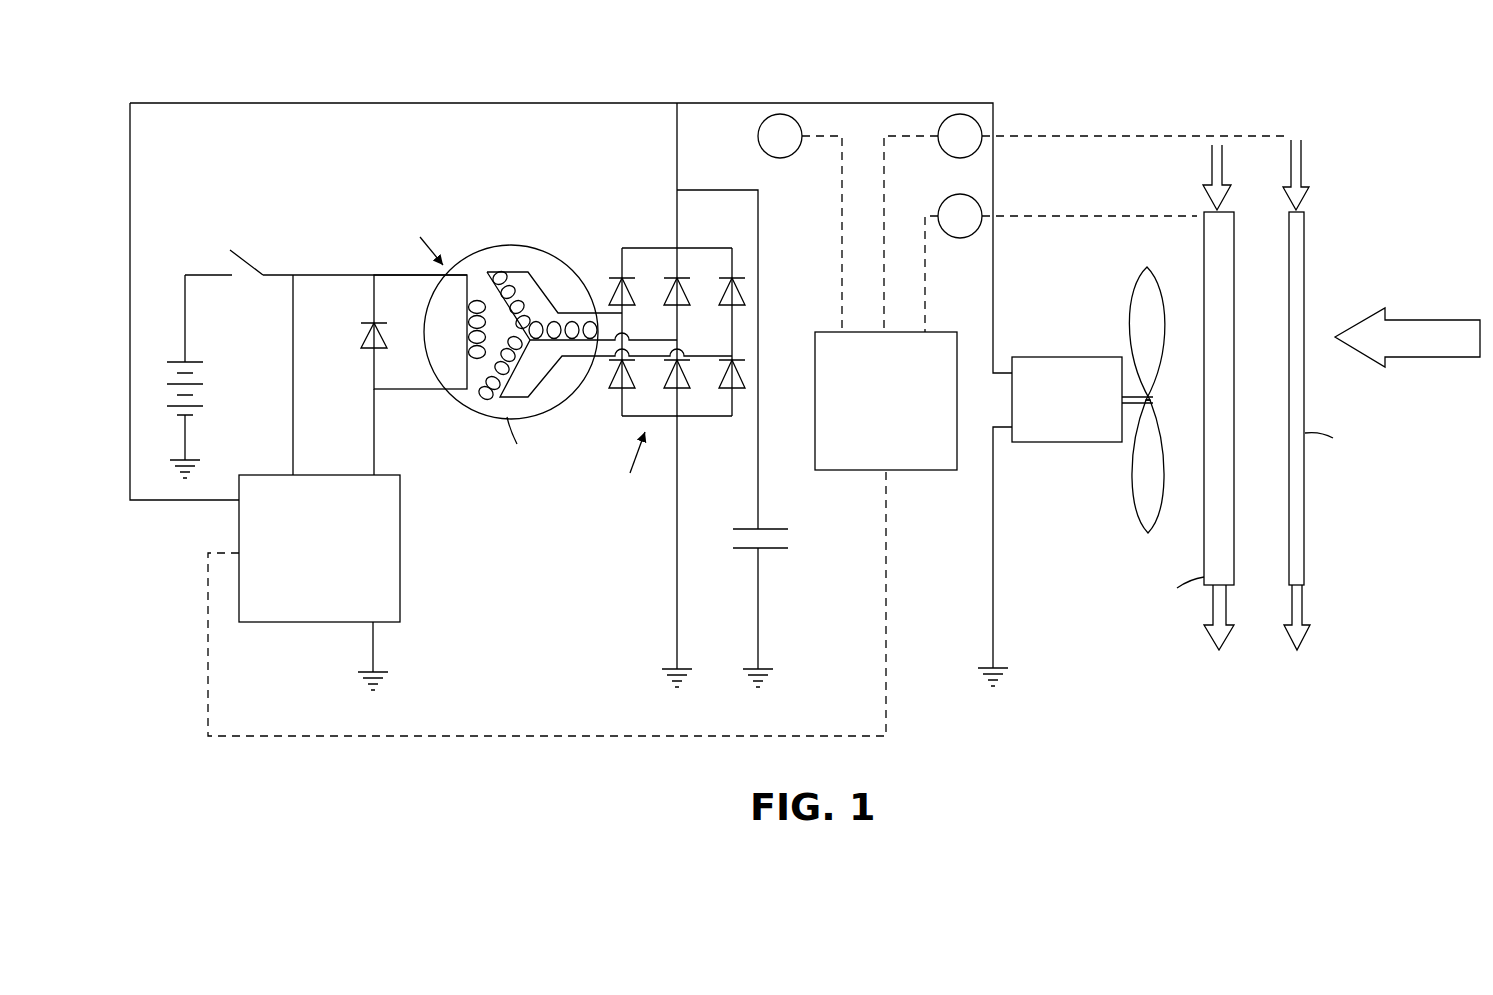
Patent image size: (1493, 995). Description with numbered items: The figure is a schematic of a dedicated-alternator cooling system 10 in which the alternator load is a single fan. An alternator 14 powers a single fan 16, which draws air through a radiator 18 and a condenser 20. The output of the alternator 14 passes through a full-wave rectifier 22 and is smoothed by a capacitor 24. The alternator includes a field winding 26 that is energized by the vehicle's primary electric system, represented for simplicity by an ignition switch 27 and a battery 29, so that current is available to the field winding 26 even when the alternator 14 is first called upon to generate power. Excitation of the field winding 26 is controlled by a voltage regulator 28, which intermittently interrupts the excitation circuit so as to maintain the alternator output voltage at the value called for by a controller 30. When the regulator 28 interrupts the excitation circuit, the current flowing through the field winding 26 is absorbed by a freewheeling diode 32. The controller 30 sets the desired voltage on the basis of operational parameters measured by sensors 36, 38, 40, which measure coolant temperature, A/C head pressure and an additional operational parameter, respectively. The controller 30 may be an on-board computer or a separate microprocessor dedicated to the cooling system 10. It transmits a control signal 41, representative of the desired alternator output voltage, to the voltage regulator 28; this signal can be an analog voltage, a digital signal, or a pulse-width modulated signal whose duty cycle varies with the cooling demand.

The dedicated-alternator cooling system 10 is at (1329, 68).
The alternator 14 is at (511, 245).
The fan 16 is at (1132, 447).
The radiator 18 is at (1234, 568).
The condenser 20 is at (1305, 558).
The full-wave rectifier 22 is at (708, 418).
The capacitor 24 is at (745, 553).
The field winding 26 is at (445, 358).
The ignition switch 27 is at (247, 286).
The voltage regulator 28 is at (400, 543).
The battery 29 is at (215, 398).
The controller 30 is at (925, 472).
The freewheeling diode 32 is at (362, 333).
The coolant temperature sensor 36 is at (960, 240).
The A/C head pressure sensor 38 is at (958, 113).
The sensor 40 is at (778, 113).
The control signal 41 is at (585, 734).